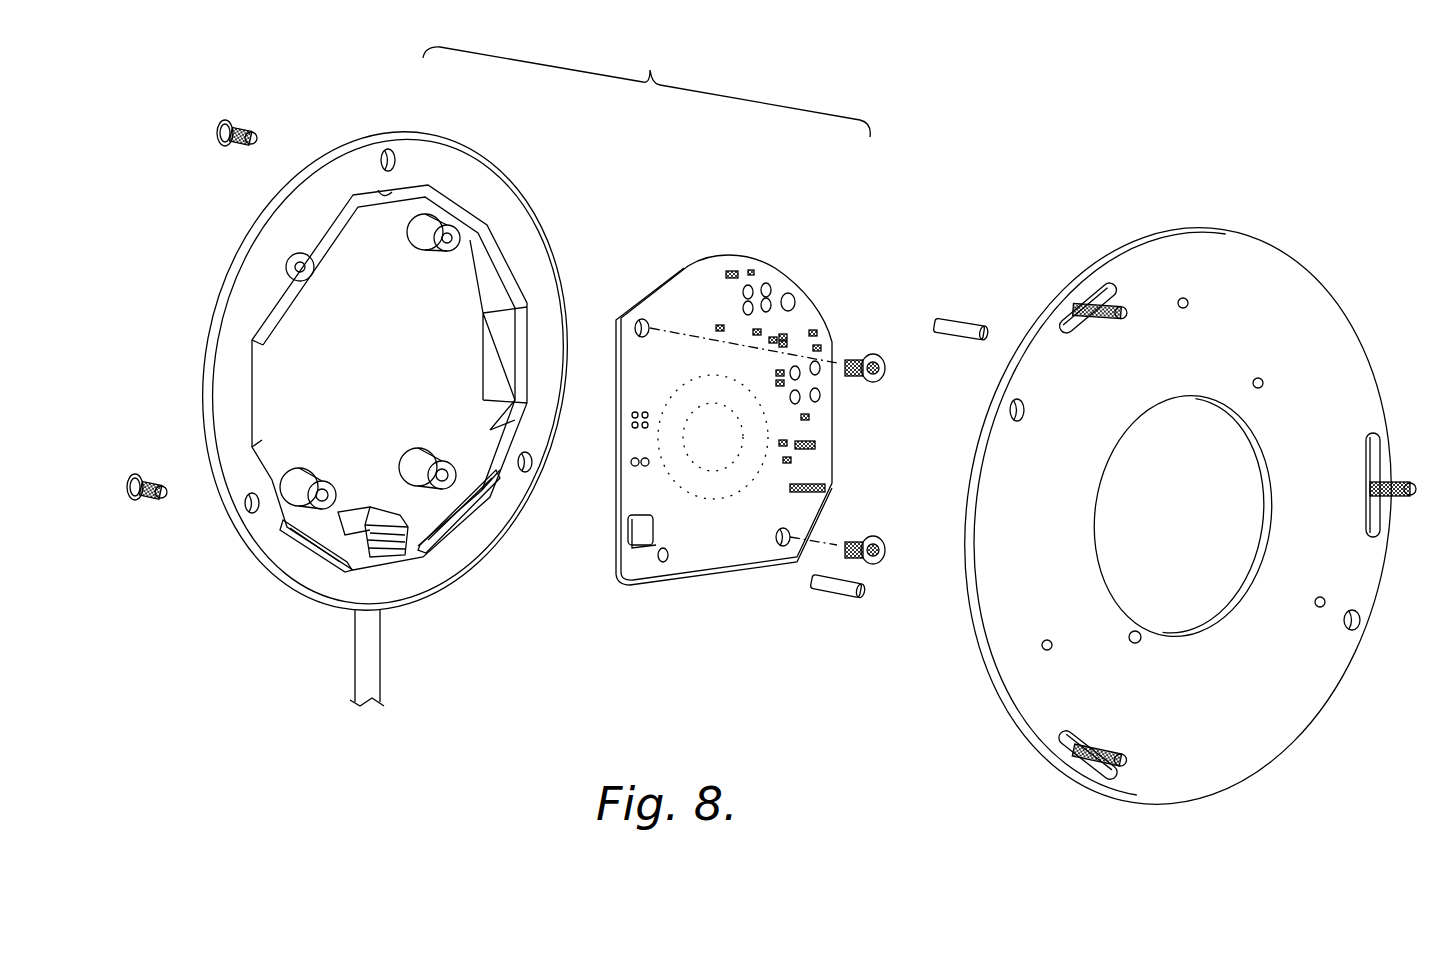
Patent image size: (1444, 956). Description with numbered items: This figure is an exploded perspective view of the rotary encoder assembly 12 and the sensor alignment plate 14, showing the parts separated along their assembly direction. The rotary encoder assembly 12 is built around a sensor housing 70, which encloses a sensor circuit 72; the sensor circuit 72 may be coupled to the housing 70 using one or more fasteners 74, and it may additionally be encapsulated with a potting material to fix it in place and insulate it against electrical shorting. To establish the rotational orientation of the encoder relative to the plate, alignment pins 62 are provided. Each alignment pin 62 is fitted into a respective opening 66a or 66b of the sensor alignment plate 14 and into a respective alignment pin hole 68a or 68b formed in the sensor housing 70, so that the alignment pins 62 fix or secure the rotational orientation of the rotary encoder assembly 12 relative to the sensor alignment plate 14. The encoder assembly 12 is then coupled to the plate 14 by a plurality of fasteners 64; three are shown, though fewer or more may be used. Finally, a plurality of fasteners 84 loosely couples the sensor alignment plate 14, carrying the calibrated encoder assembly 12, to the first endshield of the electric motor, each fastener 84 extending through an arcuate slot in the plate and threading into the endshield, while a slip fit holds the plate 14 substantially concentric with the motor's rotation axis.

The rotary encoder assembly 12 is at (646, 86).
The sensor alignment plate 14 is at (1268, 236).
The alignment pin 62 is at (963, 322).
The fastener 64 is at (217, 126).
The opening 66a is at (1265, 384).
The opening 66b is at (1140, 645).
The alignment pin hole 68a is at (443, 252).
The alignment pin hole 68b is at (322, 480).
The sensor housing 70 is at (463, 148).
The sensor circuit 72 is at (752, 262).
The fastener 74 is at (875, 540).
The fastener 84 is at (1125, 312).